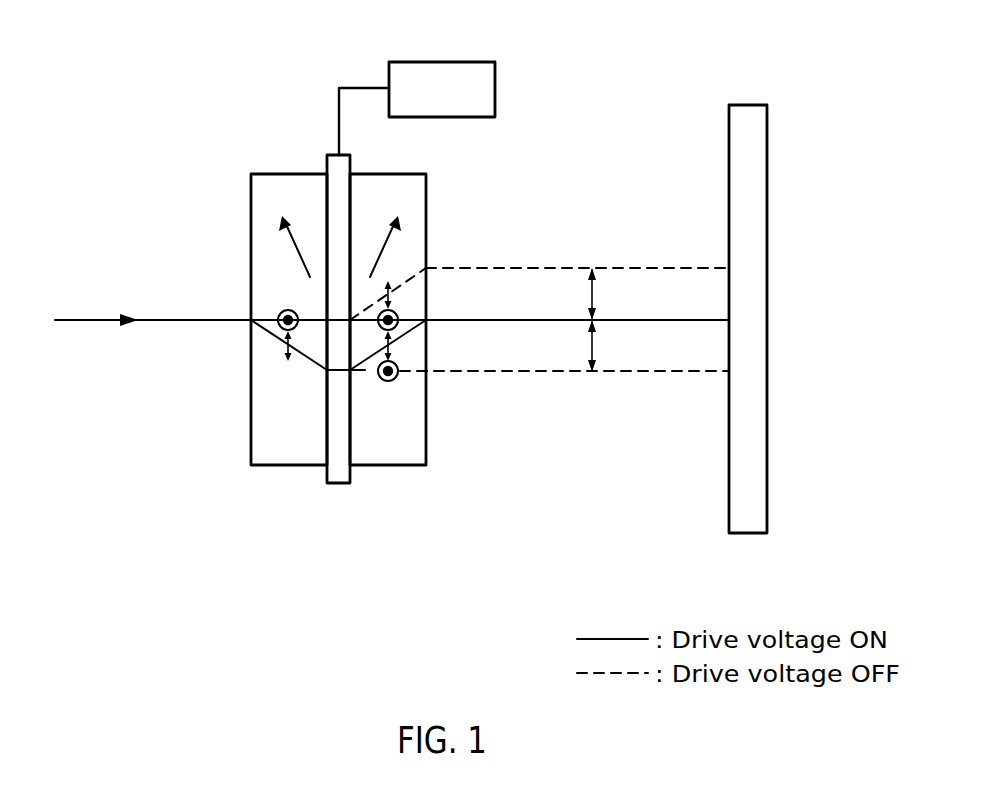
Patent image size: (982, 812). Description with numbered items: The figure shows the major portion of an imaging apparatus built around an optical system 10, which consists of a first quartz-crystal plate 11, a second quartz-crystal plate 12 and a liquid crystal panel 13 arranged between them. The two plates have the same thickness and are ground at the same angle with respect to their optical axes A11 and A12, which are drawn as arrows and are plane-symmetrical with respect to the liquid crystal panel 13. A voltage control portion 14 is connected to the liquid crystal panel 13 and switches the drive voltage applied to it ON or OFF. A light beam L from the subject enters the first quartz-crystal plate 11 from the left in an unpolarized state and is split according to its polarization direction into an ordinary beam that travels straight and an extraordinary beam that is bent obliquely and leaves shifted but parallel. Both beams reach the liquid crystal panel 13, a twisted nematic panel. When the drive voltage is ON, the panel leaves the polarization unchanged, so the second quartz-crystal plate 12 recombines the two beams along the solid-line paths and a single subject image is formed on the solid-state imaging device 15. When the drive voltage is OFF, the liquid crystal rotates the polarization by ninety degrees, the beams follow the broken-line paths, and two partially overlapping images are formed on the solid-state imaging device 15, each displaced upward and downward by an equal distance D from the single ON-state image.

The optical system 10 is at (490, 379).
The first quartz-crystal plate 11 is at (285, 456).
The second quartz-crystal plate 12 is at (539, 367).
The liquid crystal panel 13 is at (338, 473).
The voltage control portion 14 is at (447, 70).
The solid-state imaging device 15 is at (760, 196).
The light beam L is at (88, 332).
The optical axis of the first quartz-crystal plate A11 is at (293, 250).
The optical axis of the second quartz-crystal plate A12 is at (377, 252).
The distance D is at (596, 294).